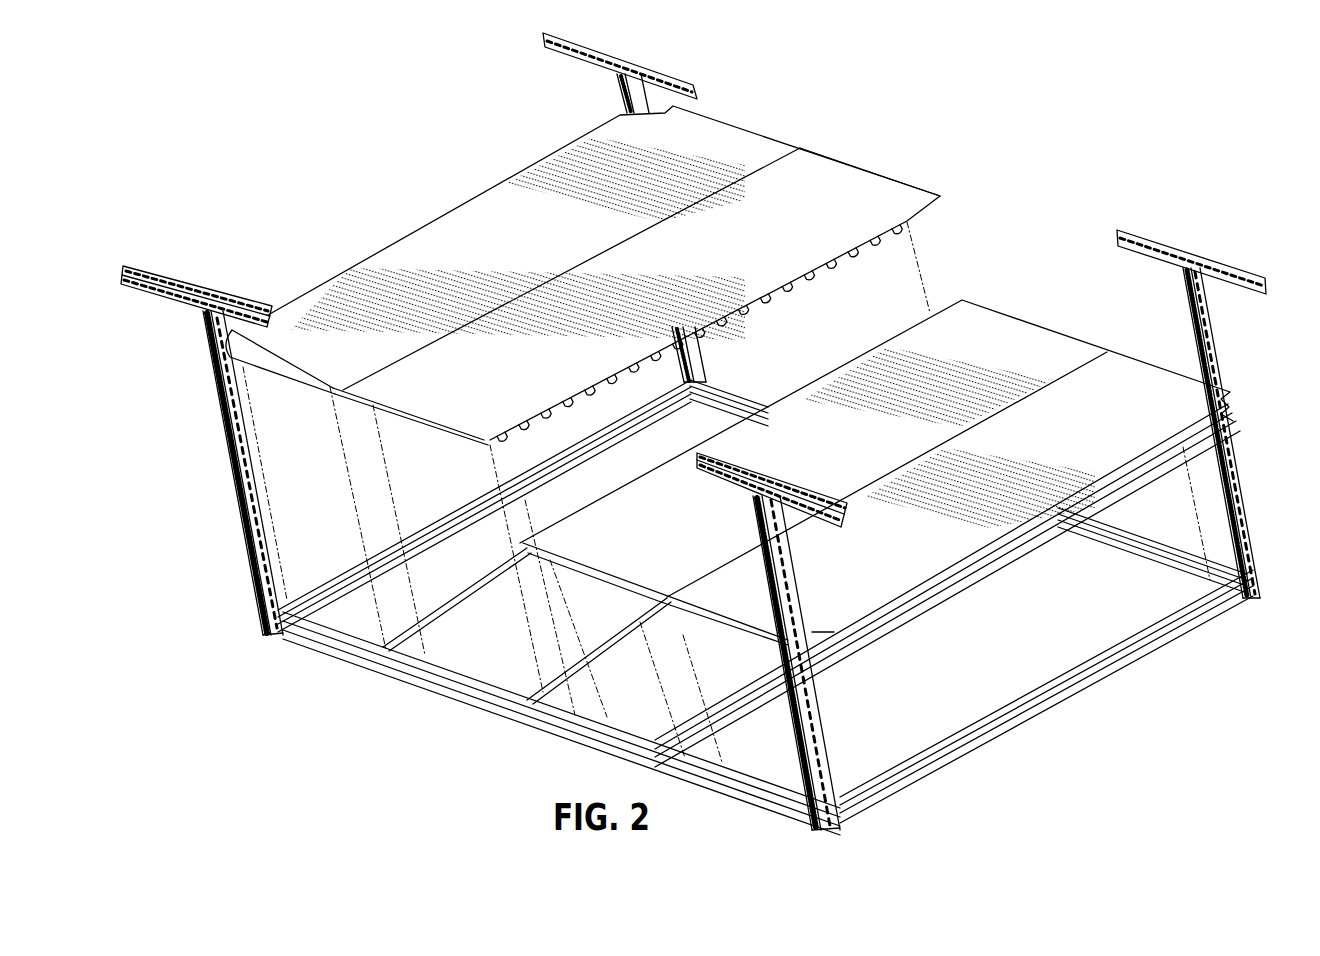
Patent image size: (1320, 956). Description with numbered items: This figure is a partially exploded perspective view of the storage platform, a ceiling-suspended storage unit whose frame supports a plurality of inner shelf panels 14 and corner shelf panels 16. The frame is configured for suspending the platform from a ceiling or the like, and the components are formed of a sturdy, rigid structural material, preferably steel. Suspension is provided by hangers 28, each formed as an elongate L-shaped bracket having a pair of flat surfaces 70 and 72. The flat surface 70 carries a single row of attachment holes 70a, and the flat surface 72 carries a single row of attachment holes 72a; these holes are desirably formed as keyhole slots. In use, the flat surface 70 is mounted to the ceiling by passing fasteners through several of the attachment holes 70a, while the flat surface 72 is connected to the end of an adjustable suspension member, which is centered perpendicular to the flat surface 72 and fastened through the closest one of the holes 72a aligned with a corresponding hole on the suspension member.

The inner shelf panels 14 is at (855, 181).
The corner shelf panels 16 is at (741, 136).
The hangers 28 is at (258, 283).
The flat surface 70 is at (193, 262).
The attachment holes 70a is at (147, 276).
The flat surface 72 is at (190, 322).
The attachment holes 72a is at (152, 296).